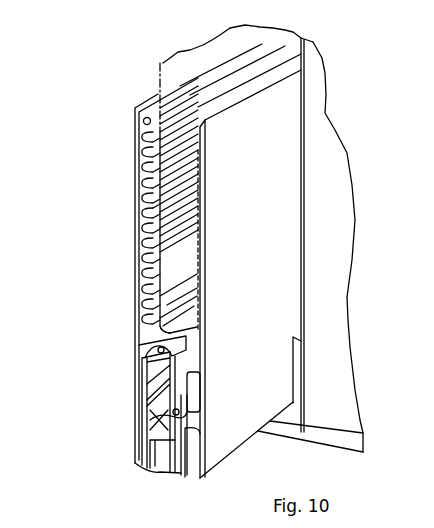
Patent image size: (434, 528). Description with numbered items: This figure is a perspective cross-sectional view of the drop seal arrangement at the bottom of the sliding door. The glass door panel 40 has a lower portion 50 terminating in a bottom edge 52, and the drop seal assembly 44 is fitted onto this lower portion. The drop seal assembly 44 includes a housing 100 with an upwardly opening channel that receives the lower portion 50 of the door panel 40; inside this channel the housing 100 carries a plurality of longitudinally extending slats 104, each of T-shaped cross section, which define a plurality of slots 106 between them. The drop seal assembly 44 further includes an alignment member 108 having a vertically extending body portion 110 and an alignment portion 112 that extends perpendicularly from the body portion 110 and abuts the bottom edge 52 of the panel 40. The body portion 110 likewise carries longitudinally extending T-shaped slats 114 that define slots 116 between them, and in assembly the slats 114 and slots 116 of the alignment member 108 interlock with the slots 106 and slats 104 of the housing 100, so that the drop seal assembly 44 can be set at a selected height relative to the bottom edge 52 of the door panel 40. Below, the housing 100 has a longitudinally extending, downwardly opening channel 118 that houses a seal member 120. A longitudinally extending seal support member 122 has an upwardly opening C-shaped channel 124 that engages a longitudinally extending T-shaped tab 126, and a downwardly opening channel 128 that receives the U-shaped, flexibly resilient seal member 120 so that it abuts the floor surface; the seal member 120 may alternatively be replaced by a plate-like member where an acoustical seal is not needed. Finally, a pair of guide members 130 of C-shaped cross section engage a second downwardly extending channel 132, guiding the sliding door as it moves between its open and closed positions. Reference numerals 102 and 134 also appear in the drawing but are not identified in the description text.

The glass door panel 40 is at (165, 63).
The drop seal assembly 44 is at (97, 170).
The lower portion 50 is at (178, 172).
The bottom edge 52 is at (184, 342).
The housing 100 is at (216, 247).
The door core section 102 is at (188, 200).
The slats 104 is at (143, 163).
The slots 106 is at (142, 320).
The alignment member 108 is at (167, 268).
The body portion 110 is at (160, 280).
The alignment portion 112 is at (185, 334).
The slats 114 is at (148, 195).
The slots 116 is at (140, 208).
The downwardly opening channel 118 is at (185, 413).
The seal member 120 is at (137, 462).
The seal support member 122 is at (180, 392).
The C-shaped channel 124 is at (150, 377).
The T-shaped tab 126 is at (150, 348).
The downwardly opening channel 128 is at (148, 390).
The guide members 130 is at (297, 440).
The second downwardly extending channel 132 is at (192, 453).
The recess side wall 134 is at (293, 403).